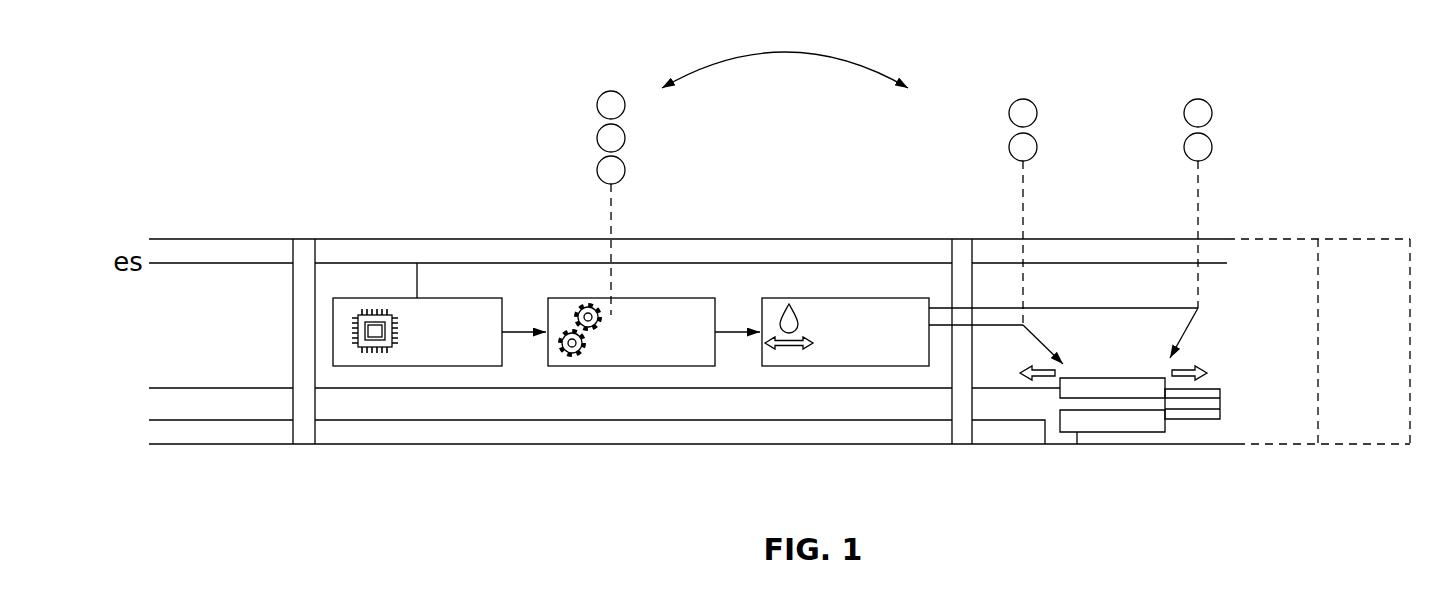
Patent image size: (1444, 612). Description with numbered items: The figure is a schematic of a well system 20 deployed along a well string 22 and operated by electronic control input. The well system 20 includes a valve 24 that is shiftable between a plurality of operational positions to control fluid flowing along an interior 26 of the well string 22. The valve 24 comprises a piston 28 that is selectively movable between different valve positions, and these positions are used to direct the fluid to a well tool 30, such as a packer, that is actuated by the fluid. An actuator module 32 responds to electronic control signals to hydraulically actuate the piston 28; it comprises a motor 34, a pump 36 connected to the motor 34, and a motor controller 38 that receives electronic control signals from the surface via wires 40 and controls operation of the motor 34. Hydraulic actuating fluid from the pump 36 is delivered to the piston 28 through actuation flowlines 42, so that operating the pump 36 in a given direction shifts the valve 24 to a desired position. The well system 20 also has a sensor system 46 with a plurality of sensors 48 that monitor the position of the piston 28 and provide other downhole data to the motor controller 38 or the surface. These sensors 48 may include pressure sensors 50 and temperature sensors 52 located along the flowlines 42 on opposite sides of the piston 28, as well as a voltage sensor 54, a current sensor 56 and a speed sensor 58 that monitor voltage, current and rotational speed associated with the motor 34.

The well system 20 is at (1357, 31).
The well string 22 is at (190, 236).
The valve 24 is at (1093, 446).
The interior 26 is at (590, 402).
The piston 28 is at (1138, 420).
The well tool 30 is at (1357, 239).
The actuator module 32 is at (784, 449).
The motor 34 is at (663, 298).
The pump 36 is at (878, 298).
The motor controller 38 is at (386, 298).
The wires 40 is at (340, 262).
The actuation flowlines 42 is at (1140, 308).
The sensor system 46 is at (517, 68).
The sensors 48 is at (780, 70).
The pressure sensors 50 is at (1037, 113).
The temperature sensors 52 is at (1037, 147).
The voltage sensor 54 is at (625, 170).
The current sensor 56 is at (625, 138).
The speed sensor 58 is at (625, 105).